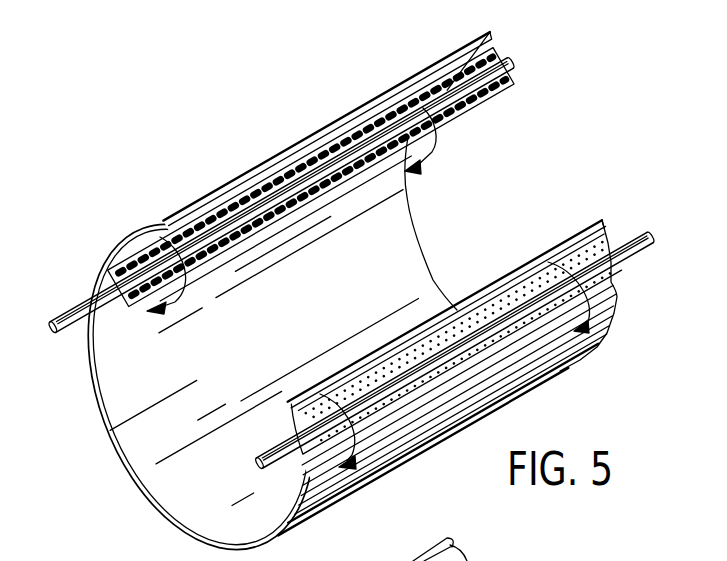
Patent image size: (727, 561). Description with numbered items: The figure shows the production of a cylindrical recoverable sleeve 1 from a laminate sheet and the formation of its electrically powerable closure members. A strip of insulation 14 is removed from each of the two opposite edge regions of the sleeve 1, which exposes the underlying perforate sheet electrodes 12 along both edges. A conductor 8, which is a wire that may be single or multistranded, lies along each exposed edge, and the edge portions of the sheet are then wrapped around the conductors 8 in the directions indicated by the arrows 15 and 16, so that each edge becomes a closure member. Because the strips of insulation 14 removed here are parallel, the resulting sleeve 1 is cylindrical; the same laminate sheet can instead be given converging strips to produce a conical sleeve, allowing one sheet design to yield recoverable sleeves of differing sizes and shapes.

The cylindrical tube body 1 is at (425, 434).
The conductor 8 is at (83, 310).
The perforate sheet electrode 12 is at (398, 190).
The insulation 14 is at (129, 262).
The arrow 15 is at (190, 291).
The arrow 16 is at (360, 447).